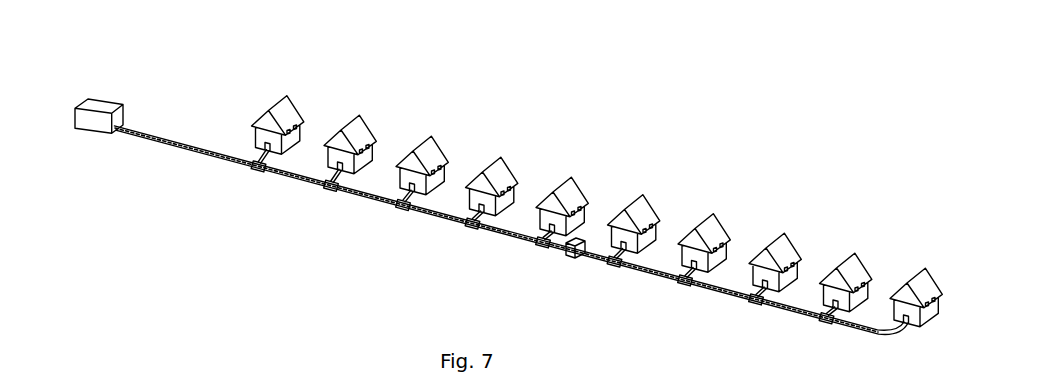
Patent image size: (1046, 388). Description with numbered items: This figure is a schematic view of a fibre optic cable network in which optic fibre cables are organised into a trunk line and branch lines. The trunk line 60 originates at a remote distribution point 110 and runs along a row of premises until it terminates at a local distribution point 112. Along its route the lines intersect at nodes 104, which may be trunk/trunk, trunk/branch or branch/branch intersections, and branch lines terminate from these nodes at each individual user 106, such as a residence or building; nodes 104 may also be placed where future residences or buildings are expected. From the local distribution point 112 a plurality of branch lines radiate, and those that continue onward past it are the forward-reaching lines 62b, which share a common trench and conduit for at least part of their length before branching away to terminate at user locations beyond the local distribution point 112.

The remote distribution point 110 is at (104, 102).
The trunk line 60 is at (172, 148).
The node 104 is at (257, 164).
The individual user 106 is at (288, 95).
The local distribution point 112 is at (575, 258).
The forward-reaching line 62b is at (720, 295).